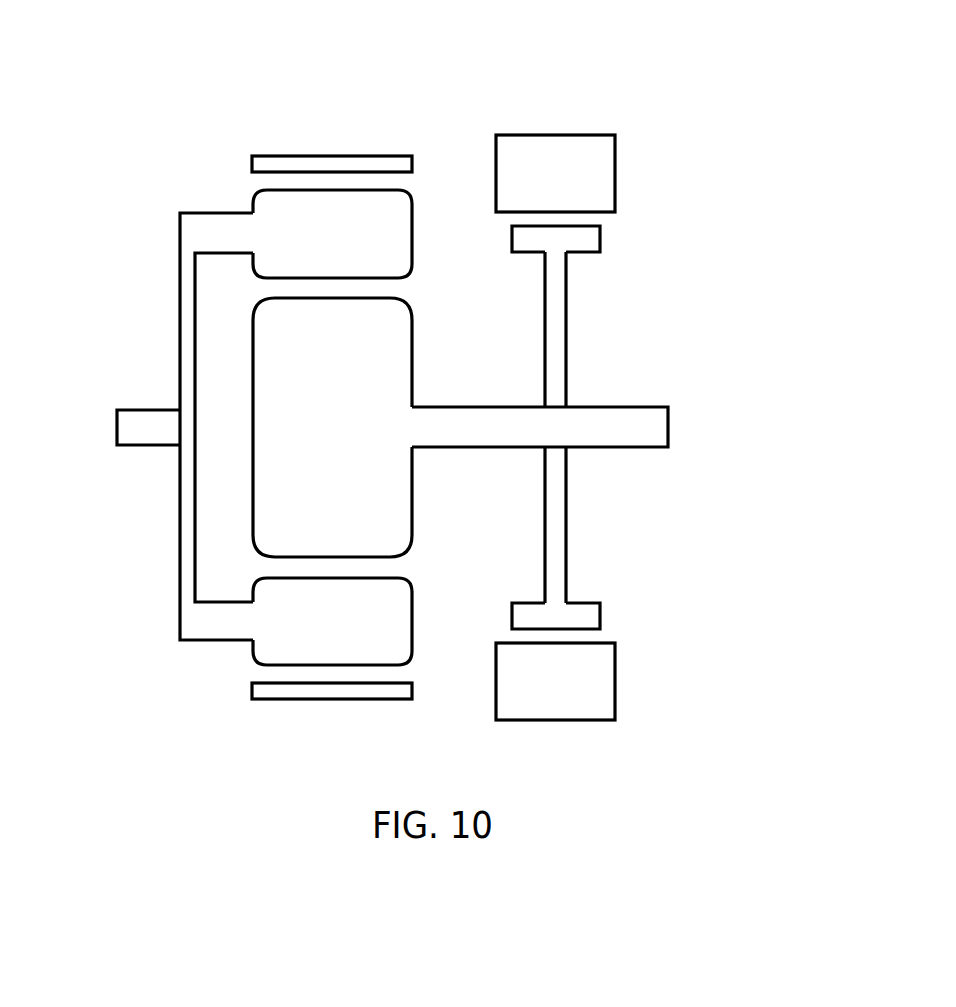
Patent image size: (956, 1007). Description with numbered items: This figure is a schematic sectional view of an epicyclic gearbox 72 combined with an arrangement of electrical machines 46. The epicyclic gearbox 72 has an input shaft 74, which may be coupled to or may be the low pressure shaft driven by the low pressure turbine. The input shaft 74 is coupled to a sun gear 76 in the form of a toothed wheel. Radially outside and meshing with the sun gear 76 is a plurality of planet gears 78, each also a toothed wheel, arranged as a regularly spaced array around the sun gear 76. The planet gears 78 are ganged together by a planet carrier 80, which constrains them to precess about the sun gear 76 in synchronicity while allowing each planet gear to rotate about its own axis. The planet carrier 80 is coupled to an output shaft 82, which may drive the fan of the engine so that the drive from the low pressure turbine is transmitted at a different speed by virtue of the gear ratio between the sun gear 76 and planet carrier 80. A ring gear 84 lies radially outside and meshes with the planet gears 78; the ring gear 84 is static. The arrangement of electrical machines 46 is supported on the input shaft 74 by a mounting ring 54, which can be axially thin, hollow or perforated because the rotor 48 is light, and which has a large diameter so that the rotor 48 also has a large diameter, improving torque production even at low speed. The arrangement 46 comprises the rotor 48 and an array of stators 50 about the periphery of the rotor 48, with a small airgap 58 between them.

The epicyclic gearbox 72 is at (162, 80).
The ring gear 84 is at (345, 155).
The planet gears 78 is at (270, 637).
The planet carrier 80 is at (185, 517).
The output shaft 82 is at (139, 433).
The sun gear 76 is at (370, 357).
The input shaft 74 is at (627, 437).
The arrangement of electrical machines 46 is at (506, 92).
The stators 50 is at (603, 160).
The rotor 48 is at (573, 232).
The mounting ring 54 is at (558, 507).
The airgap 58 is at (626, 628).